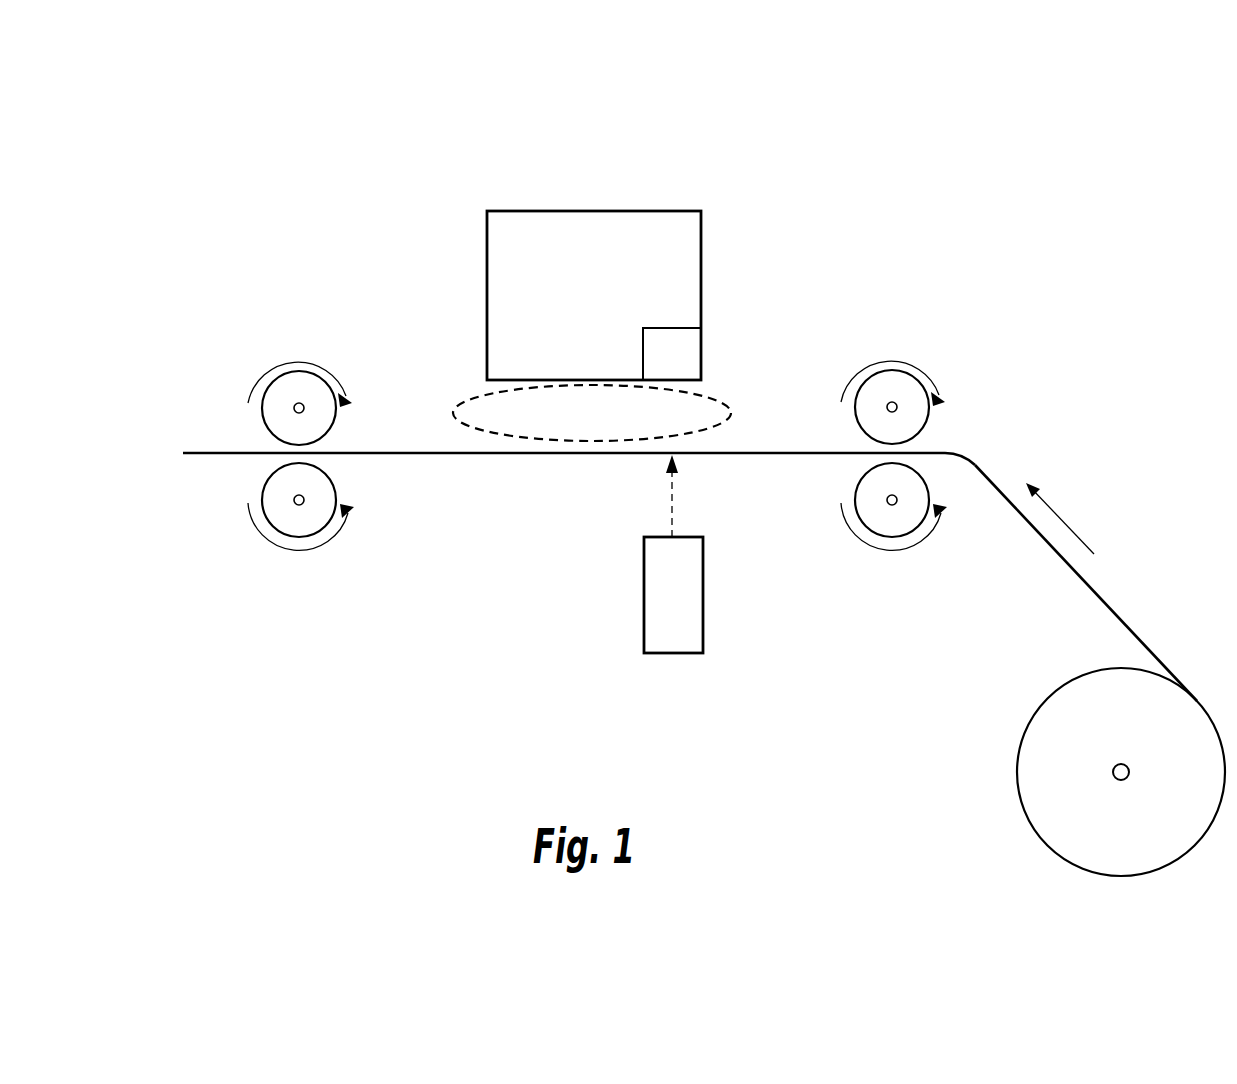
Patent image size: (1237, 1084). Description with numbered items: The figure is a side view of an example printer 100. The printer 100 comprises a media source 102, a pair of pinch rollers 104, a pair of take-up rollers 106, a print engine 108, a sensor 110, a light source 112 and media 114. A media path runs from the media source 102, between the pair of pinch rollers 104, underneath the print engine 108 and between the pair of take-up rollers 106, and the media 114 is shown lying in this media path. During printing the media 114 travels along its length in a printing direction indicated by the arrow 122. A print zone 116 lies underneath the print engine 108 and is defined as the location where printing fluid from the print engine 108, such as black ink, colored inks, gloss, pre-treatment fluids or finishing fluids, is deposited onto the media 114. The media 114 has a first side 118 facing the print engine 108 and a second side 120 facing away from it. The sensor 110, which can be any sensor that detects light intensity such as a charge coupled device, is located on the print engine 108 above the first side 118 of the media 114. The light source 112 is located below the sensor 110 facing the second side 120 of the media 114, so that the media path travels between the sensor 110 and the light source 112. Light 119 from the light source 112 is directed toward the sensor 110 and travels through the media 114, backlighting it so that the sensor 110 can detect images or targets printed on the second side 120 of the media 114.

The printer 100 is at (996, 172).
The media source 102 is at (1100, 838).
The pair of pinch rollers 104 is at (928, 417).
The pair of take-up rollers 106 is at (262, 422).
The print engine 108 is at (576, 284).
The sensor 110 is at (703, 346).
The light source 112 is at (644, 623).
The media 114 is at (1125, 625).
The print zone 116 is at (468, 398).
The first side 118 is at (786, 436).
The light 119 is at (673, 507).
The second side 120 is at (415, 458).
The arrow 122 is at (1060, 514).